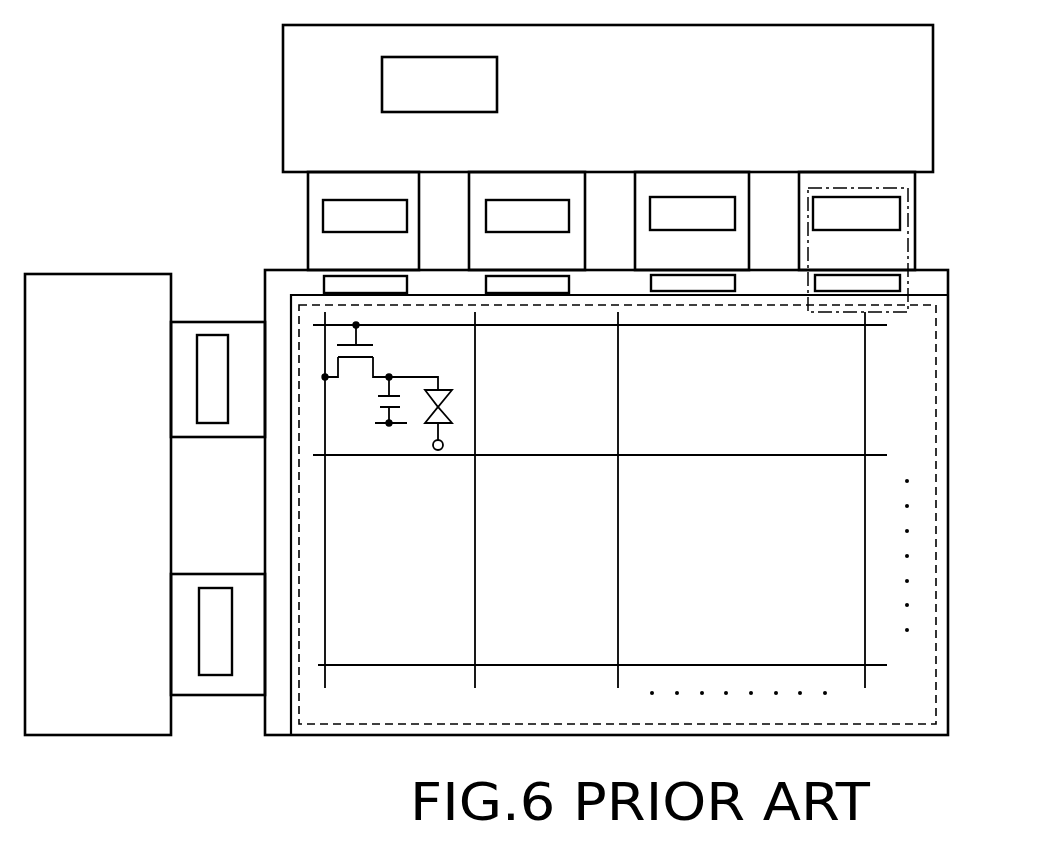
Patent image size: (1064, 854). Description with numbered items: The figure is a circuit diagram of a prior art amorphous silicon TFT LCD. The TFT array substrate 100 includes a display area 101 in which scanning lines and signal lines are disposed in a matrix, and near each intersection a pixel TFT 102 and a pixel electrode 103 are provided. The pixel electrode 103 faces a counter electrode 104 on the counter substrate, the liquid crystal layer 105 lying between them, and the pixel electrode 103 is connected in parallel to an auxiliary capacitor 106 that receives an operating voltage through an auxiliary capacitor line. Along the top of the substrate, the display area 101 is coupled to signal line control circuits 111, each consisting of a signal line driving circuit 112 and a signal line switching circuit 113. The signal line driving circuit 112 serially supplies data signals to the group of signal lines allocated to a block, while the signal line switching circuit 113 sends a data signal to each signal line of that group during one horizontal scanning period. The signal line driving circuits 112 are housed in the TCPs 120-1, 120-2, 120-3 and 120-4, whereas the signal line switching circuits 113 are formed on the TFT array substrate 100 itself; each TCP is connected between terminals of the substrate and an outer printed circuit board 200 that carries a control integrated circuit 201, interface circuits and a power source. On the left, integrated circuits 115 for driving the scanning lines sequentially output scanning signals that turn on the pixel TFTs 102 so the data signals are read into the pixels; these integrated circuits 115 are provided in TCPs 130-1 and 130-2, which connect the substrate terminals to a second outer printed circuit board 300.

The TFT array substrate 100 is at (948, 280).
The display area 101 is at (948, 418).
The pixel TFT 102 is at (374, 347).
The pixel electrode 103 is at (456, 386).
The counter electrode 104 is at (444, 444).
The liquid crystal layer 105 is at (456, 408).
The auxiliary capacitor 106 is at (380, 418).
The signal line control circuit 111 is at (928, 194).
The signal line driving circuit 112 is at (323, 216).
The signal line switching circuit 113 is at (366, 283).
The integrated circuit for driving scanning lines 115 is at (215, 423).
The TCP 120-1 is at (356, 185).
The TCP 120-2 is at (561, 185).
The TCP 120-3 is at (731, 185).
The TCP 120-4 is at (851, 185).
The TCP 130-1 is at (217, 326).
The TCP 130-2 is at (221, 576).
The outer printed circuit board 200 is at (933, 68).
The control integrated circuit 201 is at (497, 82).
The outer printed circuit board 300 is at (104, 273).